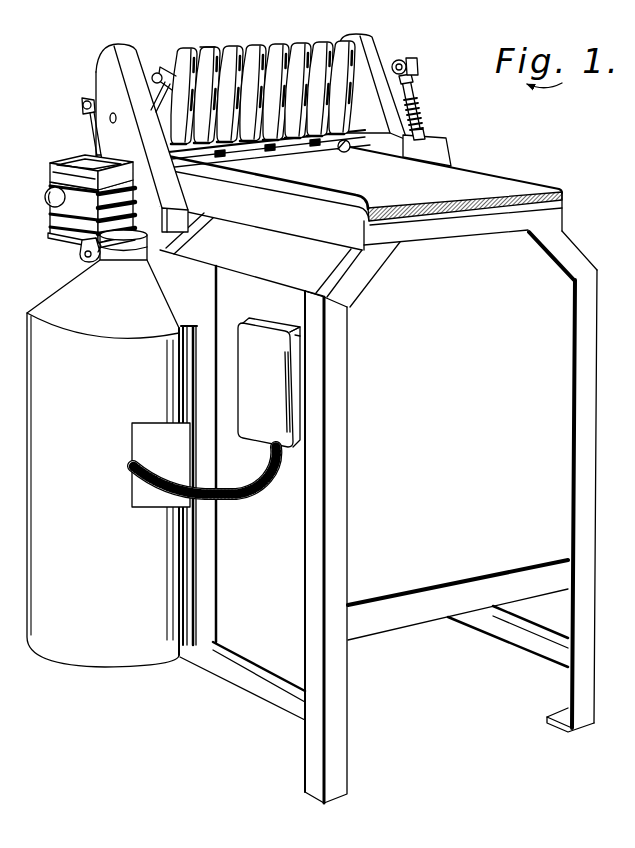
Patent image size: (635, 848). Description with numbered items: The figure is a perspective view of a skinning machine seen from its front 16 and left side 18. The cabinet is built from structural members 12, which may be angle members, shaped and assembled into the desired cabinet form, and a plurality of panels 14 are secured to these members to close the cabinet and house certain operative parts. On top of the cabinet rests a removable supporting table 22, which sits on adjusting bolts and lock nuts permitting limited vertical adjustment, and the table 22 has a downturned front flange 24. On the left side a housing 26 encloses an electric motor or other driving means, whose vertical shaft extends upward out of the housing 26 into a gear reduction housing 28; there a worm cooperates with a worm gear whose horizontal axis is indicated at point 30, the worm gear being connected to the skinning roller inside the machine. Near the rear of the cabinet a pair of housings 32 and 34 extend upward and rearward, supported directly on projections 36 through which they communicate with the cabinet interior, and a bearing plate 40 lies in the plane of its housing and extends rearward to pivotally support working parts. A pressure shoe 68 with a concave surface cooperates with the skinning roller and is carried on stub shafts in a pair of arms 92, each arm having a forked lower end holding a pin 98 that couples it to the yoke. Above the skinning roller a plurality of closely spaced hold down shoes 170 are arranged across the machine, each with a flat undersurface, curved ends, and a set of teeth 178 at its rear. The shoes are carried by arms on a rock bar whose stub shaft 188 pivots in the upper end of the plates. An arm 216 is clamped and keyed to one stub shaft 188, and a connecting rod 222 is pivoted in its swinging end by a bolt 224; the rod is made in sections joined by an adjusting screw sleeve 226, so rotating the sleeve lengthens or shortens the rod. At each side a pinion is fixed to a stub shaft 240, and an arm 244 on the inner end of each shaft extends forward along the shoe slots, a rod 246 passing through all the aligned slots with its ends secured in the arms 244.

The structural members 12 is at (335, 706).
The panels 14 is at (285, 530).
The front of the machine 16 is at (536, 270).
The left side of the machine 18 is at (288, 567).
The supporting table 22 is at (480, 182).
The downturned front flange 24 is at (549, 193).
The housing 26 is at (120, 650).
The gear reduction housing 28 is at (56, 244).
The horizontal axis of the worm gear 30 is at (50, 204).
The housing 32 is at (372, 51).
The housing 34 is at (108, 68).
The projections 36 is at (175, 258).
The bearing plate 40 is at (100, 133).
The pressure shoe 68 is at (326, 163).
The arms 92 is at (74, 259).
The pin 98 is at (88, 265).
The hold down shoes 170 is at (298, 48).
The teeth 178 is at (287, 148).
The stub shaft 188 is at (82, 98).
The arm 216 is at (403, 61).
The connecting rod 222 is at (430, 133).
The bolt 224 is at (418, 66).
The adjusting screw sleeve 226 is at (418, 117).
The stub shaft 240 is at (90, 114).
The arm 244 is at (157, 73).
The rod 246 is at (208, 55).